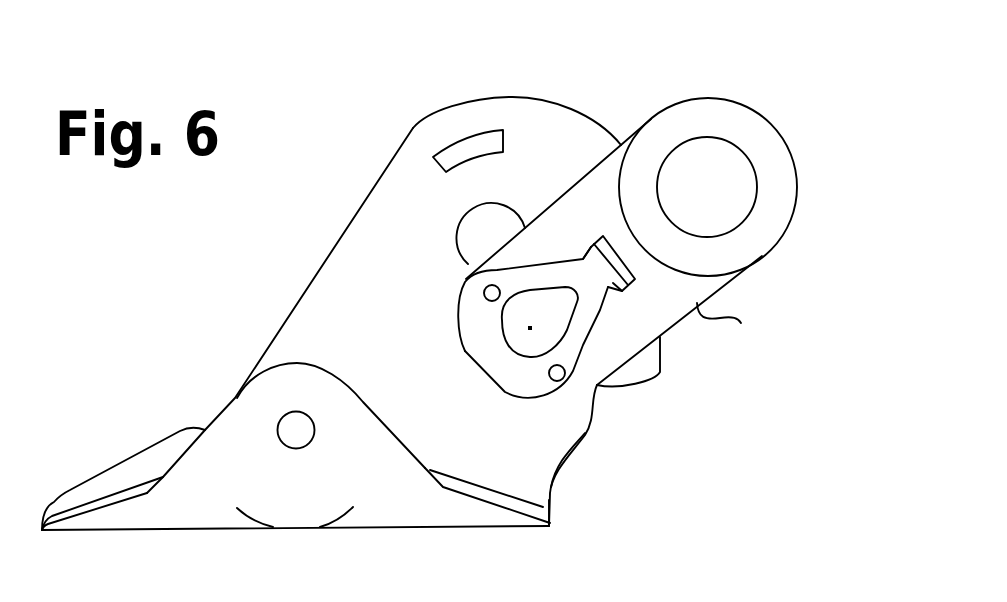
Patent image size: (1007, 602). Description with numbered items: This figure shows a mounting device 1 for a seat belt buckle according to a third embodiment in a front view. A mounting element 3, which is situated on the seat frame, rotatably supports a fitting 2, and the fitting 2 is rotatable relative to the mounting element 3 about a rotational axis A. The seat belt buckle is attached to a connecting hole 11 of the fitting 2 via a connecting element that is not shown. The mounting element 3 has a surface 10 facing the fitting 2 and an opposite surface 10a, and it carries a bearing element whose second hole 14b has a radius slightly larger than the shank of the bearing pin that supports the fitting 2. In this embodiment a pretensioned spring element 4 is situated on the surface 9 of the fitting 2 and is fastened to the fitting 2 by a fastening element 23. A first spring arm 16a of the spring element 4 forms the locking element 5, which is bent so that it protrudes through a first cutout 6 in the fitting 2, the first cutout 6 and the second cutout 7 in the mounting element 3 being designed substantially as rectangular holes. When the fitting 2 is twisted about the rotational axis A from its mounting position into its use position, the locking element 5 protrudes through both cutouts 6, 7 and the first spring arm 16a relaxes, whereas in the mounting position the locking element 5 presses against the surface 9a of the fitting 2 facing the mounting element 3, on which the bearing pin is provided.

The fastening device 1 is at (623, 453).
The fitting 2 is at (737, 122).
The mounting element 3 is at (530, 470).
The spring element 4 is at (473, 322).
The locking element 5 is at (613, 272).
The first cutout 6 is at (598, 236).
The second cutout 7 is at (449, 153).
The surface of the fitting 9 is at (732, 262).
The surface of the fitting facing the mounting element 9a is at (733, 333).
The surface of the mounting element 10 is at (281, 357).
The surface of the mounting element opposite from the fitting 10a is at (298, 303).
The connecting hole 11 is at (692, 155).
The second hole 14b is at (489, 238).
The first spring arm 16a is at (581, 247).
The fastening element 23 is at (563, 378).
The rotational axis A is at (529, 355).